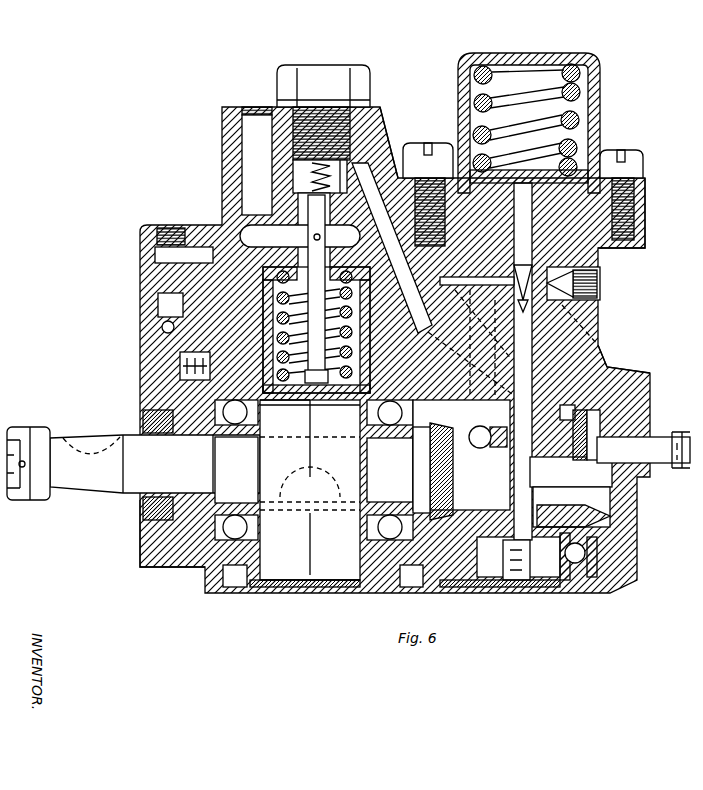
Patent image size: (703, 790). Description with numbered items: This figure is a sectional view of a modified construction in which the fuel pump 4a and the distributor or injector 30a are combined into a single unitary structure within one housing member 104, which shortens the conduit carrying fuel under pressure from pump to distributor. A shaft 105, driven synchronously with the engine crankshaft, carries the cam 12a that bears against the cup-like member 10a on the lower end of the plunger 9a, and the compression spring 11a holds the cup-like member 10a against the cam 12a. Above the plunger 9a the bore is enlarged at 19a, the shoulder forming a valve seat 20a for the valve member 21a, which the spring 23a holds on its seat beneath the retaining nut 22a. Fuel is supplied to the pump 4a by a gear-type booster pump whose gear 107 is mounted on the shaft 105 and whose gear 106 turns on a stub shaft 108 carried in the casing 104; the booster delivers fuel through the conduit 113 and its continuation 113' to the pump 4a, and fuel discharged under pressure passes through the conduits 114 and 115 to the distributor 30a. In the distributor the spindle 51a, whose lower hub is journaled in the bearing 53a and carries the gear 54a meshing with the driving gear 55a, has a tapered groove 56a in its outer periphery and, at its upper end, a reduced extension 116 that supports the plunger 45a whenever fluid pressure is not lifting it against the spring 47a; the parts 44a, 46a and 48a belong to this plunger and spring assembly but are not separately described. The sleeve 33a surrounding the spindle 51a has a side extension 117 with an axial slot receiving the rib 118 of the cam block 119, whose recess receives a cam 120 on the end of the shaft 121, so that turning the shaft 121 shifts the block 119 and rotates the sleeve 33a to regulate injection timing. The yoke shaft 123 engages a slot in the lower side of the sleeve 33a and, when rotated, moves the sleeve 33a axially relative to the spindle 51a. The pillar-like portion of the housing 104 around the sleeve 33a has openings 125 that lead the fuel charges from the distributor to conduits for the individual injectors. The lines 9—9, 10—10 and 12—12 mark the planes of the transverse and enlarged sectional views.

The fuel pump 4a is at (205, 166).
The section line 9— 9 is at (318, 86).
The plunger 9a is at (316, 294).
The section line 10— 10 is at (205, 215).
The cup-like member 10a is at (310, 490).
The compression spring 11a is at (285, 413).
The section line 12— 12 is at (618, 306).
The cam 12a is at (310, 549).
The enlarged bore 19a is at (288, 127).
The valve seat 20a is at (311, 188).
The valve member 21a is at (352, 177).
The retaining nut 22a is at (336, 75).
The spring 23a is at (297, 168).
The distributor 30a is at (622, 130).
The sleeve 33a is at (500, 408).
The screw 44a is at (600, 250).
The plunger 45a is at (601, 195).
The spring 46a is at (548, 175).
The spring 47a is at (580, 90).
The cap 48a is at (472, 56).
The spindle 51a is at (598, 366).
The bearing 53a is at (576, 565).
The gear 54a is at (612, 520).
The driving gear 55a is at (442, 493).
The groove 56a is at (598, 292).
The housing member 104 is at (373, 115).
The shaft 105 is at (102, 478).
The gear 106 is at (178, 390).
The gear 107 is at (146, 525).
The stub shaft 108 is at (182, 362).
The conduit 113 is at (285, 231).
The passage 113' is at (300, 236).
The conduit 114 is at (378, 178).
The conduit 115 is at (462, 262).
The reduced extension 116 is at (582, 289).
The extension 117 is at (550, 450).
The rib 118 is at (560, 412).
The cam block 119 is at (580, 462).
The cam 120 is at (620, 422).
The shaft 121 is at (652, 456).
The yoke shaft 123 is at (480, 447).
The openings 125 is at (596, 338).